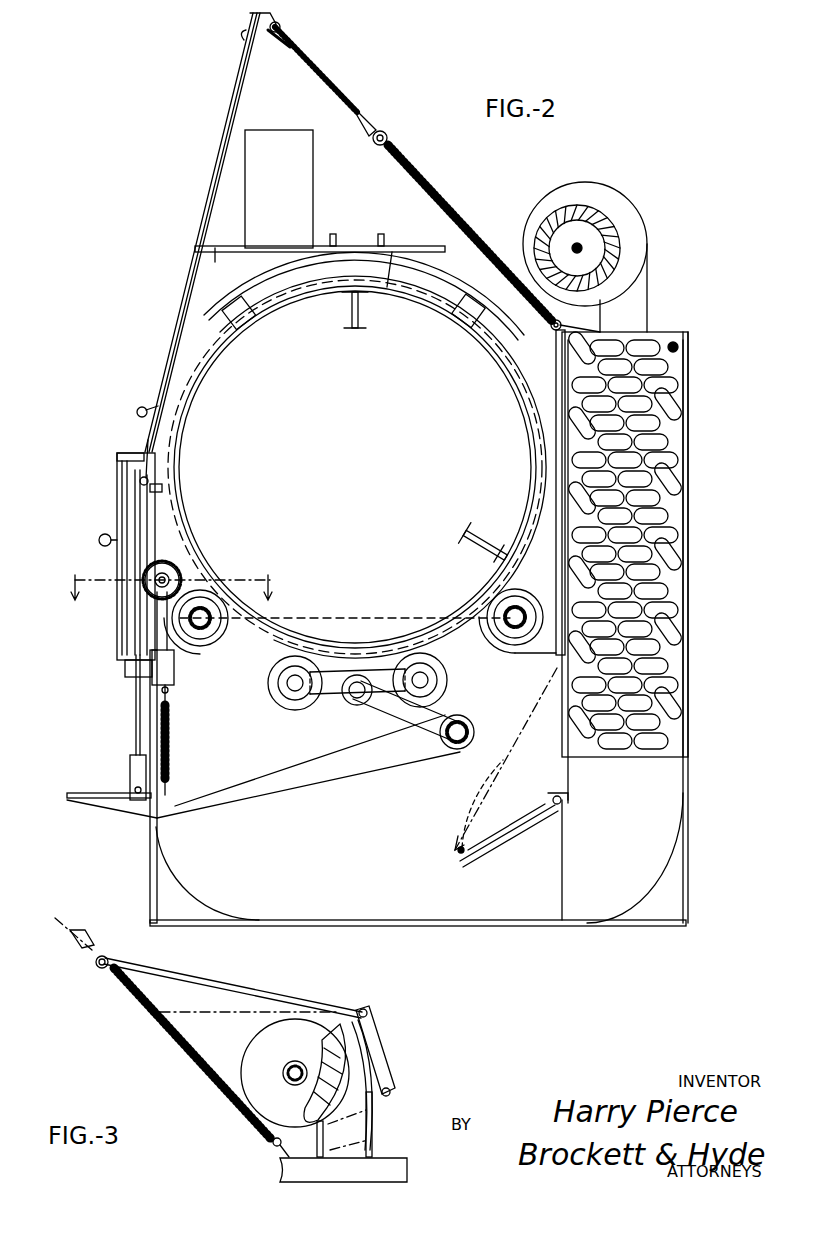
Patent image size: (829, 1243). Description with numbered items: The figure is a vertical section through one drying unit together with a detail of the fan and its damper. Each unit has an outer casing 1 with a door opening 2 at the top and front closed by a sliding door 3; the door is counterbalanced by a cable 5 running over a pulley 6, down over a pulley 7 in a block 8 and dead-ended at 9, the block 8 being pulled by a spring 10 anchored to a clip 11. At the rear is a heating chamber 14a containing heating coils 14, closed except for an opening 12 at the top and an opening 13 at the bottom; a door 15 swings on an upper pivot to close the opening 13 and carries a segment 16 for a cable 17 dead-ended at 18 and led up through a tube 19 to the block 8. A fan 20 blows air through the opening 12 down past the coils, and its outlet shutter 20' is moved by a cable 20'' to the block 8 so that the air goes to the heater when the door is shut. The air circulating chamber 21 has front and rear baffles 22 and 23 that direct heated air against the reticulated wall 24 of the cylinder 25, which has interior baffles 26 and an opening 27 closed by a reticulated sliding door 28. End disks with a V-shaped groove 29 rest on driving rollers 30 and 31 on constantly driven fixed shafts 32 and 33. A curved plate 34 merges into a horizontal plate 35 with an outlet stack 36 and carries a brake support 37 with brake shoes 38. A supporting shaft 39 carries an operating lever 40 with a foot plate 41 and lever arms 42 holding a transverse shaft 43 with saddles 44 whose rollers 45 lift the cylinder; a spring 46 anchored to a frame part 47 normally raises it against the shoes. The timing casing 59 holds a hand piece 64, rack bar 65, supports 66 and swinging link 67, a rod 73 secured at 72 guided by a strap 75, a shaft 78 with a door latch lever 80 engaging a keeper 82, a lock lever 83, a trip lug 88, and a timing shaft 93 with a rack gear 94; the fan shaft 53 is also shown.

In FIG. 2, the outer casing 1 is at (150, 858).
In FIG. 2, the door opening 2 is at (183, 283).
In FIG. 2, the sliding door 3 is at (168, 310).
In FIG. 2, the cable 5 is at (266, 65).
In FIG. 3, the cable 5 is at (58, 917).
In FIG. 2, the pulley 6 is at (282, 25).
In FIG. 2, the pulley 7 is at (358, 106).
In FIG. 3, the pulley 7 is at (73, 944).
In FIG. 2, the block 8 is at (383, 129).
In FIG. 3, the block 8 is at (95, 966).
In FIG. 2, the dead end 9 is at (288, 48).
In FIG. 2, the spring 10 is at (416, 174).
In FIG. 3, the spring 10 is at (192, 1065).
In FIG. 2, the clip 11 is at (562, 311).
In FIG. 3, the clip 11 is at (270, 1148).
In FIG. 2, the top opening 12 is at (646, 328).
In FIG. 3, the top opening 12 is at (346, 1147).
In FIG. 2, the bottom opening 13 is at (562, 845).
In FIG. 2, the heating coils 14 is at (689, 537).
In FIG. 2, the heating chamber 14a is at (694, 462).
In FIG. 3, the heating chamber 14a is at (290, 1168).
In FIG. 2, the door 15 is at (486, 845).
In FIG. 2, the segment 16 is at (486, 803).
In FIG. 2, the cable 17 is at (519, 747).
In FIG. 2, the dead end 18 is at (455, 848).
In FIG. 2, the tube 19 is at (552, 577).
In FIG. 2, the fan 20 is at (605, 257).
In FIG. 3, the fan 20 is at (298, 1081).
In FIG. 3, the hinged shutter 20' is at (397, 1103).
In FIG. 3, the cable 20'' is at (398, 1050).
In FIG. 2, the air circulating chamber 21 is at (313, 825).
In FIG. 2, the front baffle 22 is at (206, 658).
In FIG. 2, the rear baffle 23 is at (538, 657).
In FIG. 2, the reticulated wall 24 is at (258, 625).
In FIG. 2, the cylinder 25 is at (357, 467).
In FIG. 2, the baffles 26 is at (355, 330).
In FIG. 2, the opening 27 is at (258, 341).
In FIG. 2, the reticulated sliding door 28 is at (274, 325).
In FIG. 2, the V-shaped groove 29 is at (266, 648).
In FIG. 2, the driving roller 30 is at (188, 617).
In FIG. 2, the driving roller 31 is at (488, 598).
In FIG. 2, the fixed shaft 32 is at (204, 610).
In FIG. 2, the fixed shaft 33 is at (506, 611).
In FIG. 2, the curved upper back plate 34 is at (436, 260).
In FIG. 2, the horizontal plate 35 is at (228, 250).
In FIG. 2, the outlet stack 36 is at (290, 184).
In FIG. 2, the brake support 37 is at (386, 288).
In FIG. 2, the brake shoes 38 is at (264, 296).
In FIG. 2, the supporting shaft 39 is at (450, 746).
In FIG. 2, the operating lever 40 is at (243, 790).
In FIG. 2, the foot plate 41 is at (78, 791).
In FIG. 2, the lever arms 42 is at (378, 702).
In FIG. 2, the transverse shaft 43 is at (348, 697).
In FIG. 2, the saddles 44 is at (298, 704).
In FIG. 2, the rollers 45 is at (270, 686).
In FIG. 2, the spring 46 is at (170, 748).
In FIG. 2, the frame part 47 is at (168, 688).
In FIG. 2, the blower shaft 53 is at (580, 244).
In FIG. 2, the timing casing 59 is at (124, 665).
In FIG. 2, the hand piece 64 is at (100, 545).
In FIG. 2, the rack bar 65 is at (141, 537).
In FIG. 2, the rack bar supports 66 is at (121, 500).
In FIG. 2, the swinging link 67 is at (117, 466).
In FIG. 2, the attachment point 72 is at (136, 798).
In FIG. 2, the rod 73 is at (134, 703).
In FIG. 2, the upper strap 75 is at (122, 452).
In FIG. 2, the transverse shaft 78 is at (149, 480).
In FIG. 2, the door latch lever 80 is at (150, 474).
In FIG. 2, the keeper 82 is at (133, 447).
In FIG. 2, the lock lever 83 is at (163, 487).
In FIG. 2, the trip lug 88 is at (180, 493).
In FIG. 2, the timing shaft 93 is at (158, 585).
In FIG. 2, the rack gear 94 is at (170, 563).